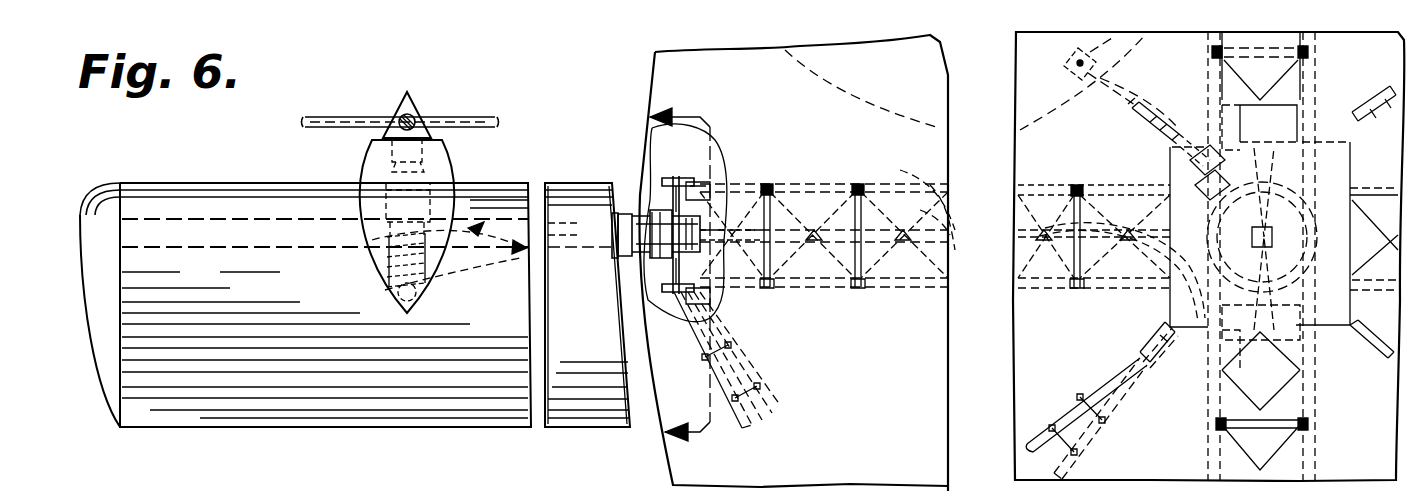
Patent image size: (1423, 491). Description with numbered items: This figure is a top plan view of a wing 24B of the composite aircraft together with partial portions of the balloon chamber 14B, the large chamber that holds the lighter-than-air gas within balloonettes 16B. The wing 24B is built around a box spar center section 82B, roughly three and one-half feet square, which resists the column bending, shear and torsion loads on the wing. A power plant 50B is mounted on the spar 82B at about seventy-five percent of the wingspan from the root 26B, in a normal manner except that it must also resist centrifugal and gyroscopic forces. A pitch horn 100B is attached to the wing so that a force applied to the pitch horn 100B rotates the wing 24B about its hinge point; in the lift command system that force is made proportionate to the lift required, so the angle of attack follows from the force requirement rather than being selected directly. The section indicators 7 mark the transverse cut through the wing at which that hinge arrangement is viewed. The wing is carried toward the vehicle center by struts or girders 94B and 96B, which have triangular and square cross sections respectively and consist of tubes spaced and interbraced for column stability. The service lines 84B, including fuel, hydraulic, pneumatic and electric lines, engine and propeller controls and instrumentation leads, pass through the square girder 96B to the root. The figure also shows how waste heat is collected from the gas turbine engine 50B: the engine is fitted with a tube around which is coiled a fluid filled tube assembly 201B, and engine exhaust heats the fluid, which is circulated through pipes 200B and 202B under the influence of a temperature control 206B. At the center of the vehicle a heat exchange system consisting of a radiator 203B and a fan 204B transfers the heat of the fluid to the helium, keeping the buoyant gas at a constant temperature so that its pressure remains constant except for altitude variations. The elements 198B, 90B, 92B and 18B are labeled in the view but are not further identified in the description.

The box spar center section 82B is at (185, 216).
The power plant 50B is at (370, 183).
The spring bolt 198B is at (372, 252).
The fluid filled tube assembly 201B is at (440, 293).
The wing 24B is at (490, 206).
The end section 90B is at (640, 292).
The pipe 200B is at (545, 170).
The pipe 202B is at (548, 272).
The root 26B is at (622, 212).
The pitch horn 100B is at (682, 224).
The flange 92B is at (634, 215).
The balloon chamber 14B is at (646, 92).
The section line 7 is at (684, 275).
The balloonettes 16B is at (840, 96).
The strut or girder 96B is at (882, 192).
The service lines 84B is at (956, 215).
The strut or girder 94B is at (698, 182).
The fan 204B is at (1168, 158).
The temperature control 206B is at (1190, 86).
The radiator 203B is at (1278, 124).
The wheel 18B is at (1308, 278).